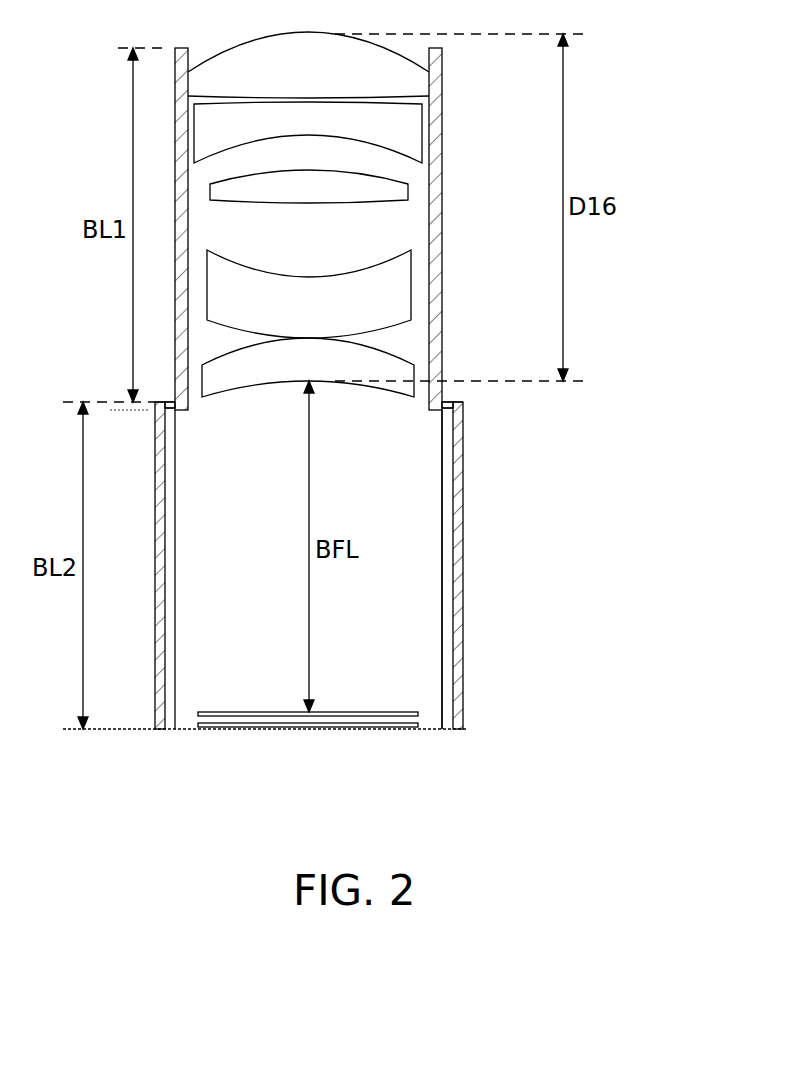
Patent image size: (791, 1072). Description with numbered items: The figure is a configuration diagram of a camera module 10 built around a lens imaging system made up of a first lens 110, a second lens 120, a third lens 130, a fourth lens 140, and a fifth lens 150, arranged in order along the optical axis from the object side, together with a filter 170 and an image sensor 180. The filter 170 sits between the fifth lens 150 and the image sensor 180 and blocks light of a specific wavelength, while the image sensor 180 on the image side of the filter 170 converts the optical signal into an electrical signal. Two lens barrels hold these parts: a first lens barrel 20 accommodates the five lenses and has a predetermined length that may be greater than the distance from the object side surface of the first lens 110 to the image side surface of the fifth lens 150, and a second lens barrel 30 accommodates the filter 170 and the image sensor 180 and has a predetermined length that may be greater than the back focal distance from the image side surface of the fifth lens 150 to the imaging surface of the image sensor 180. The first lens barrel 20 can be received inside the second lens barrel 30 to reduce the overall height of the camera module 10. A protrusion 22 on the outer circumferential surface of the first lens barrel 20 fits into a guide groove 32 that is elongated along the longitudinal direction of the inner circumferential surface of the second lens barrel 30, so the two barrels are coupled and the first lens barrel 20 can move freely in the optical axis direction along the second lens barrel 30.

The camera module 10 is at (600, 122).
The first lens barrel 20 is at (438, 232).
The protrusion 22 is at (448, 408).
The second lens barrel 30 is at (455, 468).
The guide groove 32 is at (445, 536).
The first lens 110 is at (395, 73).
The second lens 120 is at (388, 122).
The third lens 130 is at (378, 187).
The fourth lens 140 is at (393, 286).
The fifth lens 150 is at (395, 356).
The filter 170 is at (250, 716).
The image sensor 180 is at (348, 727).